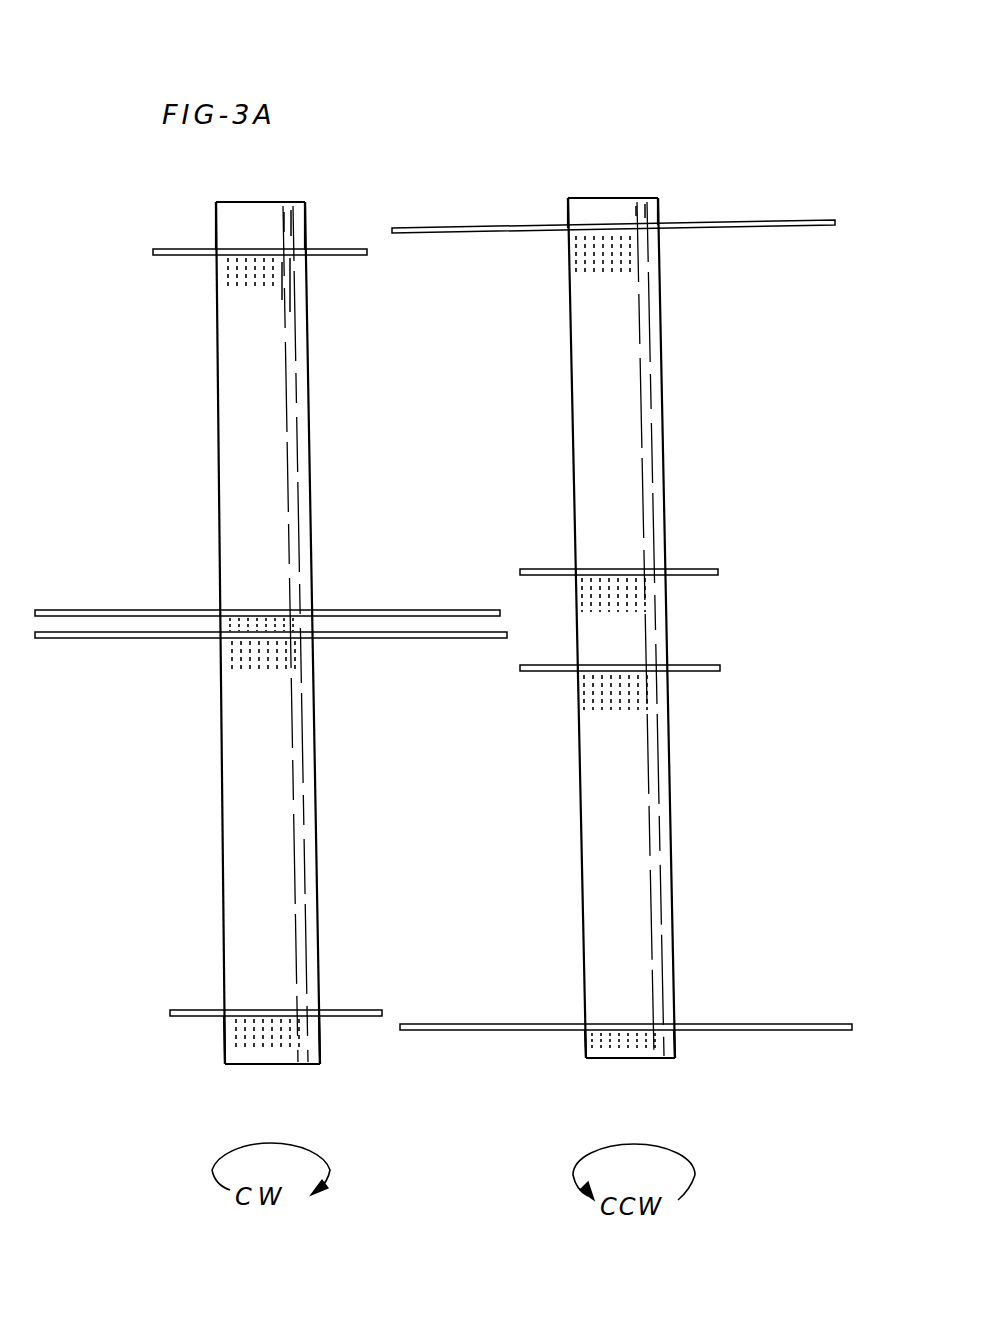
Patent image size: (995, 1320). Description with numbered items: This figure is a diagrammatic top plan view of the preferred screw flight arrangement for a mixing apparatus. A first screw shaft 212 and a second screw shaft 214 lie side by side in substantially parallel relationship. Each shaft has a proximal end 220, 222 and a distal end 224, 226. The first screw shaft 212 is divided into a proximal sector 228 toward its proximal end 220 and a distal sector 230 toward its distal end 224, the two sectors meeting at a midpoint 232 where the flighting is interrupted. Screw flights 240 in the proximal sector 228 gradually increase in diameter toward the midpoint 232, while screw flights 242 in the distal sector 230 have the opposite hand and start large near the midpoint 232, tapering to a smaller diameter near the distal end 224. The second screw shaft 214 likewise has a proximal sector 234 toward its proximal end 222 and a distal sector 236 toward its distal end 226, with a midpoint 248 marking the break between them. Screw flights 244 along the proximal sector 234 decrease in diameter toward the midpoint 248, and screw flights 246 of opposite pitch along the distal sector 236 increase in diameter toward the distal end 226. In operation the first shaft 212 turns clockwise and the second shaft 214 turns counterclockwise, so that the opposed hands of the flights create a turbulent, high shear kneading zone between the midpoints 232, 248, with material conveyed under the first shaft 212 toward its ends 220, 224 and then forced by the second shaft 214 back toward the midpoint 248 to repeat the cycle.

The first screw shaft 212 is at (221, 870).
The second screw shaft 214 is at (660, 915).
The proximal end 220 is at (265, 1066).
The proximal end 222 is at (625, 1060).
The distal end 224 is at (272, 201).
The distal end 226 is at (628, 198).
The proximal sector 228 is at (370, 808).
The distal sector 230 is at (345, 420).
The midpoint 232 is at (270, 625).
The proximal sector 234 is at (710, 856).
The distal sector 236 is at (708, 402).
The screw flights 240 is at (340, 640).
The screw flights 242 is at (330, 248).
The screw flights 244 is at (720, 672).
The screw flights 246 is at (722, 228).
The midpoint 248 is at (630, 624).